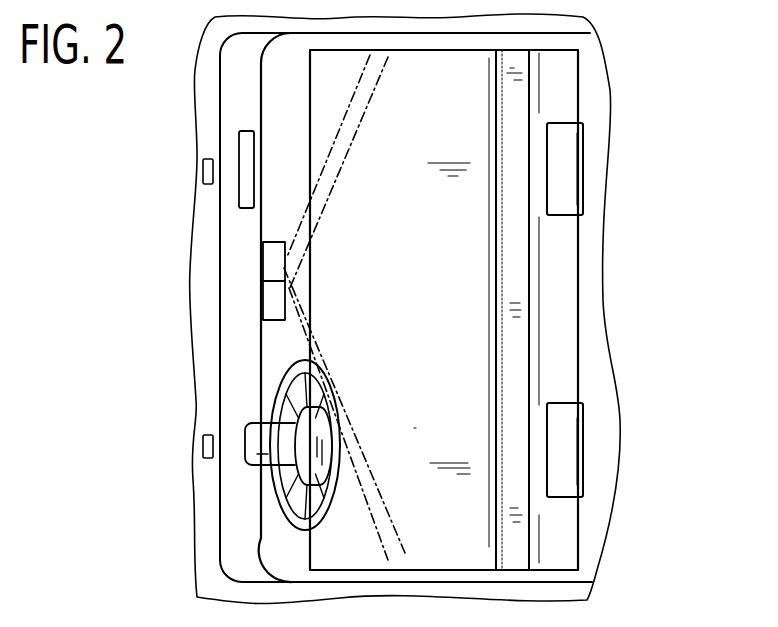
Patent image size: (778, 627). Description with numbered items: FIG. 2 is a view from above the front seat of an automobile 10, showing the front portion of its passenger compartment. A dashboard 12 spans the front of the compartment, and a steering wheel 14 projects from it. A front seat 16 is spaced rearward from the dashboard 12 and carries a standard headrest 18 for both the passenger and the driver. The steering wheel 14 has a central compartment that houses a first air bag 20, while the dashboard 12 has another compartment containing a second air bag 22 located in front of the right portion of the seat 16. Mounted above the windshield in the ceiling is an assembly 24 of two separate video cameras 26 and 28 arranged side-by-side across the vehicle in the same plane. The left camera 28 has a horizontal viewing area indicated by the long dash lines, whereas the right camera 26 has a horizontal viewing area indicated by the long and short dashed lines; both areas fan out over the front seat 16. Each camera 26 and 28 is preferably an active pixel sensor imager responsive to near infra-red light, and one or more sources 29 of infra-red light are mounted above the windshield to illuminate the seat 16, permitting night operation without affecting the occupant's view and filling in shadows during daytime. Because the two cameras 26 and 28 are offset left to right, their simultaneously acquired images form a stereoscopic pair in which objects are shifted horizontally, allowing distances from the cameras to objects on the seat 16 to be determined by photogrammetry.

The automobile 10 is at (640, 301).
The dashboard 12 is at (258, 396).
The steering wheel 14 is at (277, 450).
The front seat 16 is at (558, 280).
The headrest 18 is at (563, 165).
The first air bag 20 is at (318, 432).
The second air bag 22 is at (245, 145).
The assembly 24 is at (209, 270).
The right video camera 26 is at (272, 268).
The left video camera 28 is at (236, 301).
The source of infra-red light 29 is at (203, 171).